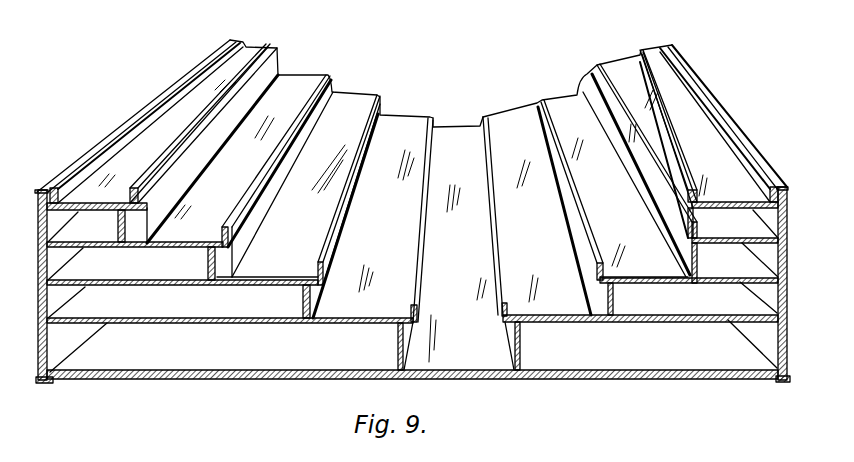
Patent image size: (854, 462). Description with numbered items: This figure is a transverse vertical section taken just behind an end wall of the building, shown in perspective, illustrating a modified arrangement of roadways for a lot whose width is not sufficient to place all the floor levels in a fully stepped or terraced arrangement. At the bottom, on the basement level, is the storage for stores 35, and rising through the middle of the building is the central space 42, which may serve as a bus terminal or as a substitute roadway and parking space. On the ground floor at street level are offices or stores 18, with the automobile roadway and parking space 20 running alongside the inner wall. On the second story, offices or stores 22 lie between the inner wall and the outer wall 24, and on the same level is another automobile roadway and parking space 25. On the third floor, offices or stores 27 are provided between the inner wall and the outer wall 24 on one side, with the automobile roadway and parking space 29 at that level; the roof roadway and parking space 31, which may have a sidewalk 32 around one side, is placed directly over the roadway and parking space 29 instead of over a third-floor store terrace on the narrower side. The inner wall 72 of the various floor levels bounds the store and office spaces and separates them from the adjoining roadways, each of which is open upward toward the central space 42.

The offices or stores 18 is at (412, 298).
The automobile roadway and parking space 20 is at (452, 214).
The offices or stores 22 is at (412, 260).
The outer wall 24 is at (44, 276).
The automobile roadway and parking space 25 is at (453, 179).
The offices or stores 27 is at (97, 223).
The automobile roadway and parking space 29 is at (462, 148).
The roof roadway and parking space 31 is at (422, 123).
The sidewalk 32 is at (156, 118).
The storage for stores 35 is at (412, 347).
The central space 42 is at (459, 243).
The inner wall 72 is at (157, 181).